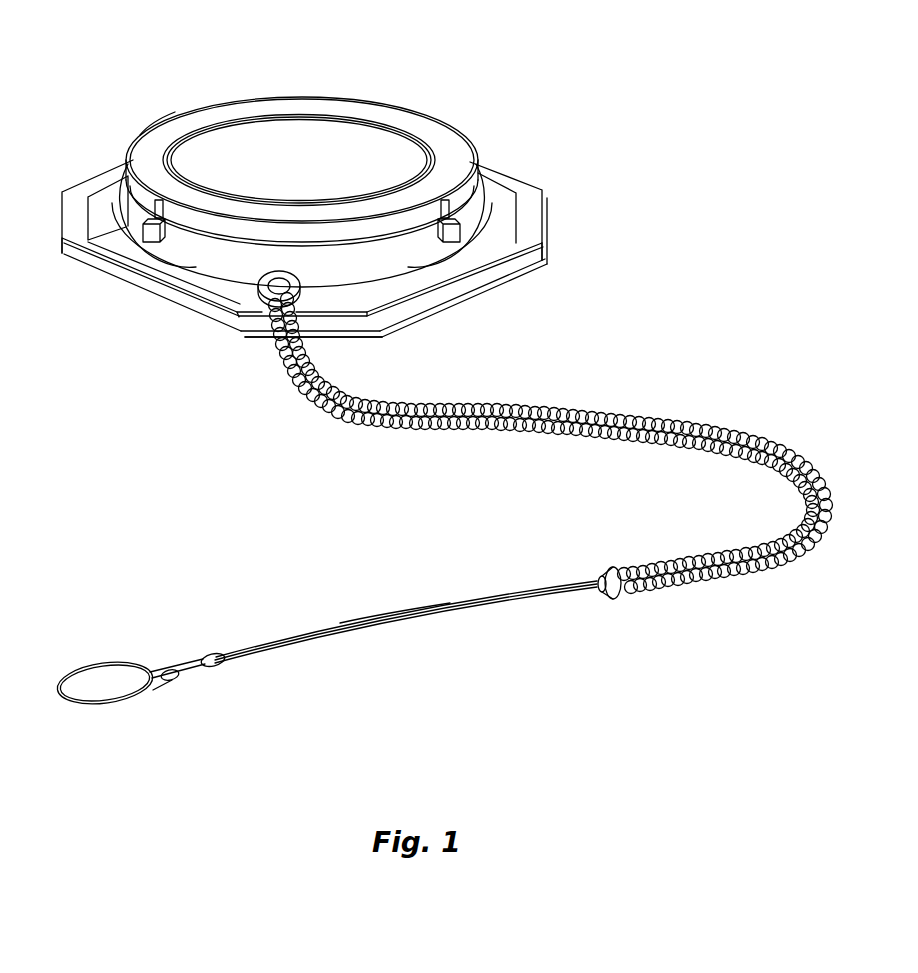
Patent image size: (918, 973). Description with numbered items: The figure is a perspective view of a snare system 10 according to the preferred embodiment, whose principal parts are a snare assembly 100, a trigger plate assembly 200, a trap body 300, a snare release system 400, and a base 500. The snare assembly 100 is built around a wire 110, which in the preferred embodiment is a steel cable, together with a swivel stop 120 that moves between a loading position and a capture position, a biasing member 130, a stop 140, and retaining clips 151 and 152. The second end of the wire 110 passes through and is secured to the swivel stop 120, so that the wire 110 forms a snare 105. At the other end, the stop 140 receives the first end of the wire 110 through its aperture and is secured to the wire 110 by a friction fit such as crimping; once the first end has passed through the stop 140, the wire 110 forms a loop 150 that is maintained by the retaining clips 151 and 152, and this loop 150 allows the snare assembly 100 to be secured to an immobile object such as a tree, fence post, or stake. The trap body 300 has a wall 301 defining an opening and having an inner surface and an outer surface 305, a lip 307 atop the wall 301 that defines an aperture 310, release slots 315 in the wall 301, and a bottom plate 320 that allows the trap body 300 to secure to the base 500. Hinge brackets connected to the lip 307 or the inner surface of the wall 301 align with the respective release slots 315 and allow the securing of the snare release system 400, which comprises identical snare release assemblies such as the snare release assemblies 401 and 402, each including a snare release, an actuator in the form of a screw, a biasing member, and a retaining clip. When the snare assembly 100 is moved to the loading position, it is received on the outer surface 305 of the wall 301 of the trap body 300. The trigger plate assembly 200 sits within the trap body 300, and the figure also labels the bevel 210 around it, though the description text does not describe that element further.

The snare system 10 is at (495, 77).
The snare assembly 100 is at (406, 622).
The snare 105 is at (403, 243).
The wire 110 is at (350, 622).
The swivel stop 120 is at (304, 292).
The biasing member 130 is at (770, 431).
The stop 140 is at (603, 590).
The loop 150 is at (63, 696).
The retaining clip 151 is at (216, 665).
The retaining clip 152 is at (168, 681).
The trigger plate assembly 200 is at (299, 131).
The lens bevel 210 is at (313, 128).
The trap body 300 is at (316, 176).
The wall 301 is at (89, 196).
The outer surface 305 is at (87, 240).
The lip 307 is at (177, 123).
The aperture 310 is at (352, 115).
The release slots 315 is at (158, 207).
The bottom plate 320 is at (473, 193).
The snare release system 400 is at (322, 249).
The snare release assembly 401 is at (516, 242).
The snare release assembly 402 is at (120, 252).
The base 500 is at (210, 322).